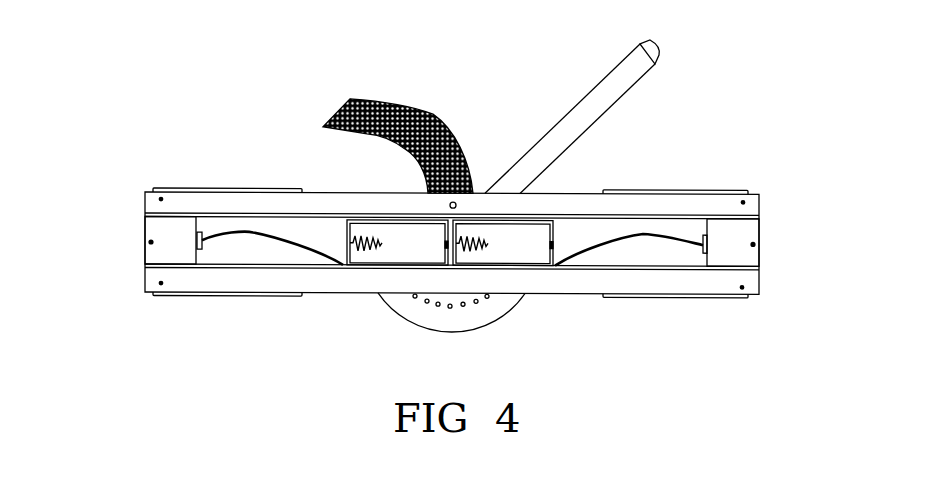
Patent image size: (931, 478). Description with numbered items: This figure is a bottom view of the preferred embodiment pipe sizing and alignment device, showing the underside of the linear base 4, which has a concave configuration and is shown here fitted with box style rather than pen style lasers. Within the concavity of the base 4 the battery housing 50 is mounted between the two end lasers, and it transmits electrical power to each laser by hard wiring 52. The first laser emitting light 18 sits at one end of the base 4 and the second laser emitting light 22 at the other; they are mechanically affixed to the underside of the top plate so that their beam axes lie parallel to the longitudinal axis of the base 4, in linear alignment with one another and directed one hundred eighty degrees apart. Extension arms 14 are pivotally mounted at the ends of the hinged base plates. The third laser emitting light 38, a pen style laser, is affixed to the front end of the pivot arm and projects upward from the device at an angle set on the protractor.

The linear base 4 is at (142, 282).
The extension arms 14 is at (227, 188).
The first laser emitting light 18 is at (157, 227).
The second laser emitting light 22 is at (733, 225).
The third laser emitting light 38 is at (658, 41).
The battery housing 50 is at (532, 254).
The hard wiring 52 is at (677, 240).